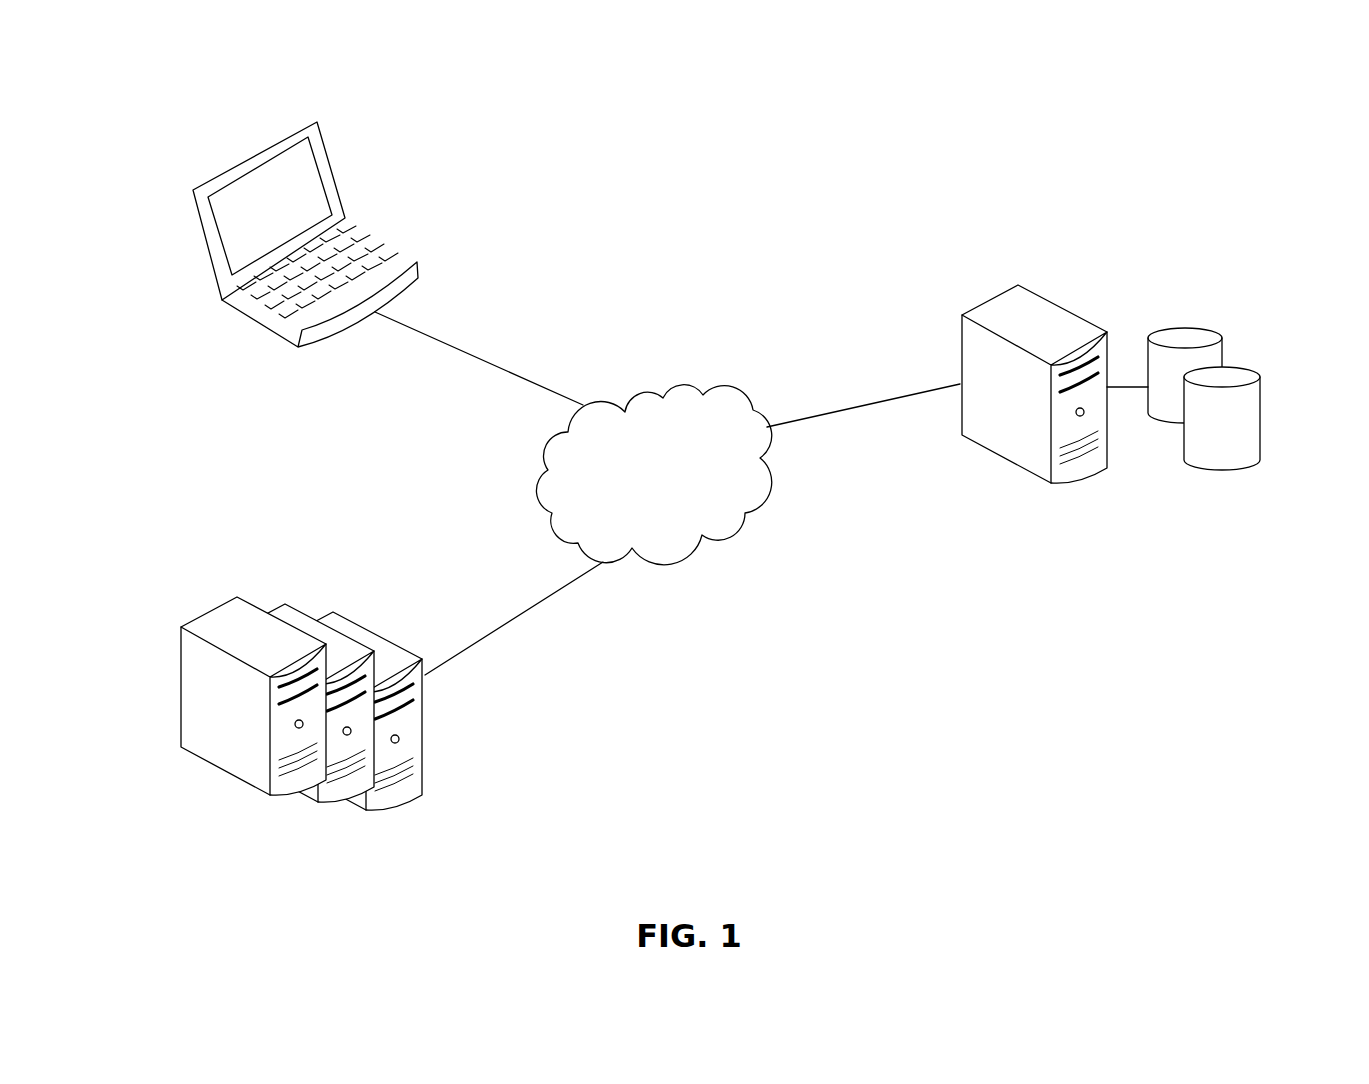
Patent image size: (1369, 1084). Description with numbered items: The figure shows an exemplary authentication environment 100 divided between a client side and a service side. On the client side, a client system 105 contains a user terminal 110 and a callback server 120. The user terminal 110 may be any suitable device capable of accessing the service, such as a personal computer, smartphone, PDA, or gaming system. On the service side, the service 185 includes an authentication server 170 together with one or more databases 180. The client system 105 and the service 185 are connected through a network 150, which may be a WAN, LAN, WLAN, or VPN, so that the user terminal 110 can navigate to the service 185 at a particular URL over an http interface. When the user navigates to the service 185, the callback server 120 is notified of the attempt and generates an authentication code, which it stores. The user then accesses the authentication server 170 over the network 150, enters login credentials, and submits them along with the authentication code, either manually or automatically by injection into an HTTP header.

The authentication environment 100 is at (140, 72).
The client system 105 is at (337, 761).
The user terminal 110 is at (173, 272).
The callback server 120 is at (348, 706).
The network 150 is at (653, 475).
The authentication server 170 is at (1043, 296).
The databases 180 is at (1235, 384).
The service 185 is at (1132, 396).